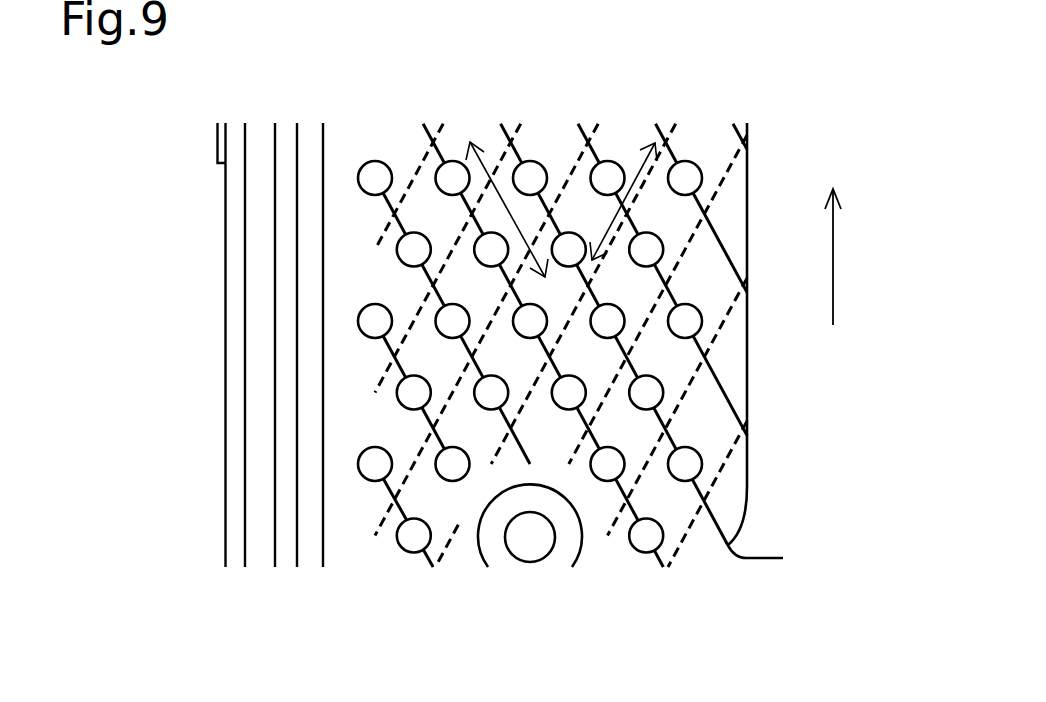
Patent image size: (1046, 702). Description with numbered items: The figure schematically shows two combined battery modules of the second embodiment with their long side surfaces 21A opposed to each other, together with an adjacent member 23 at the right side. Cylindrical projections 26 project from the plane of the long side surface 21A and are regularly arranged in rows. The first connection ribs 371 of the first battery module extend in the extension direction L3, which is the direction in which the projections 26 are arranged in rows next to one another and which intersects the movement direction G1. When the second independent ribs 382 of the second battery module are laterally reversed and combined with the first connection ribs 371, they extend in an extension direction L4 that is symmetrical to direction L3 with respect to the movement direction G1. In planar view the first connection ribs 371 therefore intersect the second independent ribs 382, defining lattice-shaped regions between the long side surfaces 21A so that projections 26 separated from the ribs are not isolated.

The long side surface 21A is at (342, 190).
The second separator 23 is at (767, 546).
The projections 26 is at (399, 258).
The first connection ribs 371 is at (388, 200).
The second independent ribs 382 is at (383, 235).
The extension direction L3 is at (482, 162).
The extension direction L4 is at (644, 165).
The movement direction G1 is at (849, 257).